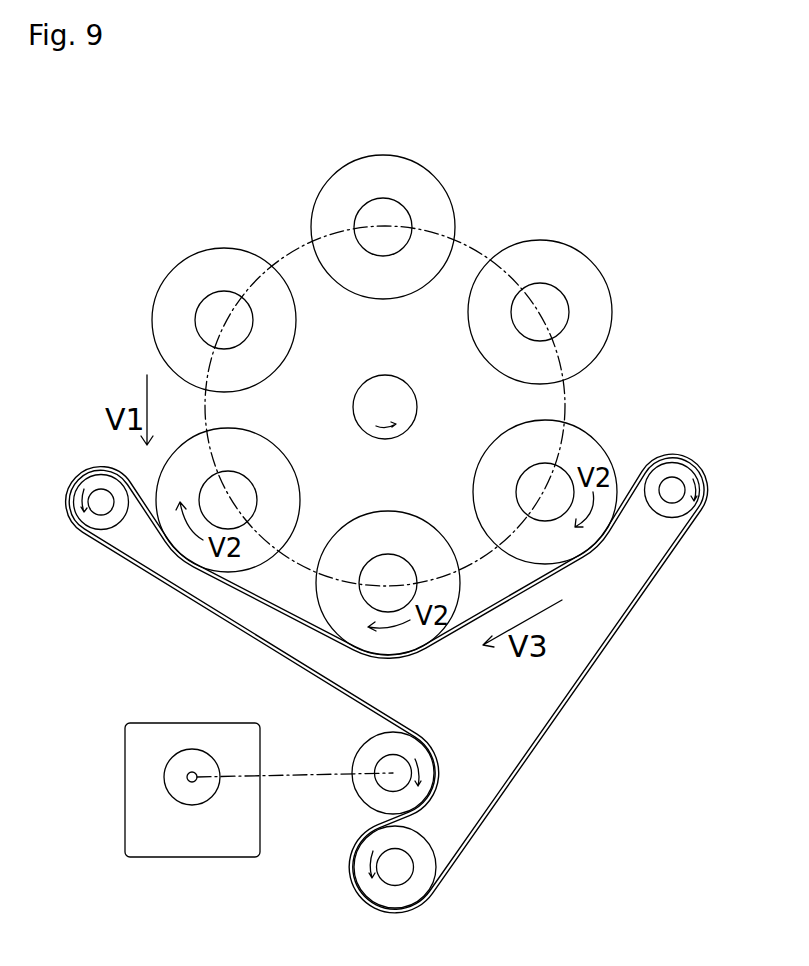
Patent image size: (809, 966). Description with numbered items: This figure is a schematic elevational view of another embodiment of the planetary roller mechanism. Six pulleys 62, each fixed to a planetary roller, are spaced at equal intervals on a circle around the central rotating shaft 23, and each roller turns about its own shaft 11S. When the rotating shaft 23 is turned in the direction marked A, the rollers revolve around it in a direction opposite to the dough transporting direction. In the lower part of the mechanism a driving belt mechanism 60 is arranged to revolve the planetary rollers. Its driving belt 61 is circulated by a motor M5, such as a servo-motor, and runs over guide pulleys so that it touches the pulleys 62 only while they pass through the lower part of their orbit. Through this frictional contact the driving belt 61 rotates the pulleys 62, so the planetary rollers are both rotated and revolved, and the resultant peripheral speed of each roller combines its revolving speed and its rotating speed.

The pulley 62 is at (423, 170).
The shaft 11S is at (356, 214).
The rotating shaft 23 is at (385, 382).
The driving belt mechanism 60 is at (388, 683).
The driving belt 61 is at (551, 716).
The motor M5 is at (137, 800).